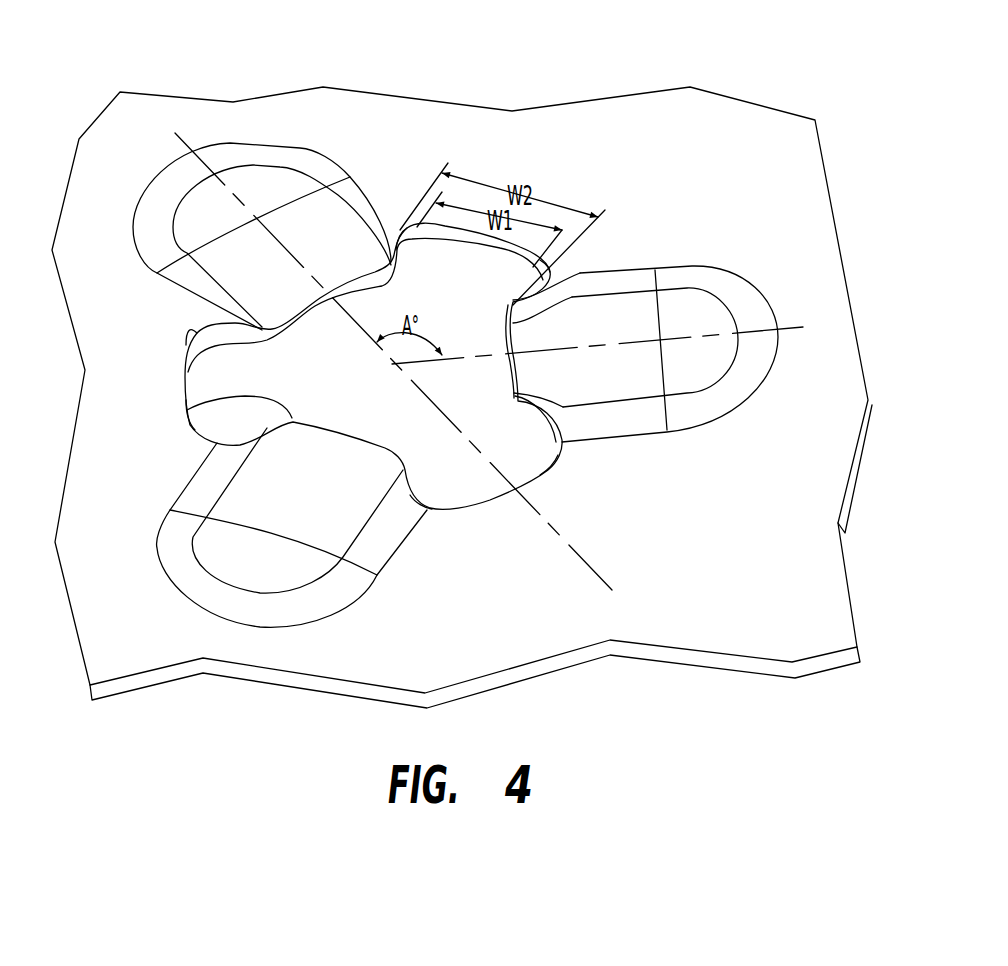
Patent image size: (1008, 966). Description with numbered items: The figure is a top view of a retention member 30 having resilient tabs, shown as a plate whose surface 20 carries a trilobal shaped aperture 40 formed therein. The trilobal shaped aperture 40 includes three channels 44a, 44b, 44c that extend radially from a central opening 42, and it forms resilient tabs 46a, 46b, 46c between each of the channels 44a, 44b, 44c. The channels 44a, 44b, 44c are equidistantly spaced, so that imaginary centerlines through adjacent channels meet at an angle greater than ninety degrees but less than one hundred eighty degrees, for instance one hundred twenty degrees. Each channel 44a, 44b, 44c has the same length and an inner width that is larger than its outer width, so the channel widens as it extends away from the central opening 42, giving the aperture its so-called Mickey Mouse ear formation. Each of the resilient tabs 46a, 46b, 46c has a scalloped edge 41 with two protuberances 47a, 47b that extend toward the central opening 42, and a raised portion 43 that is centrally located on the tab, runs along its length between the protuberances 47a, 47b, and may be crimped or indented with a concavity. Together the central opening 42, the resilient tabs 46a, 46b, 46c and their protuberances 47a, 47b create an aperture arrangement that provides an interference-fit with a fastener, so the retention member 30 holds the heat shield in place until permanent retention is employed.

The plate surface 20 is at (749, 589).
The retention member 30 is at (610, 70).
The trilobal shaped aperture 40 is at (165, 357).
The scalloped edge 41 is at (292, 310).
The central opening 42 is at (385, 394).
The raised portion 43 is at (265, 210).
The channel 44a is at (207, 392).
The channel 44b is at (423, 257).
The channel 44c is at (452, 493).
The resilient tab 46a is at (360, 472).
The resilient tab 46b is at (343, 260).
The resilient tab 46c is at (632, 378).
The protuberance 47a is at (515, 328).
The protuberance 47b is at (550, 398).